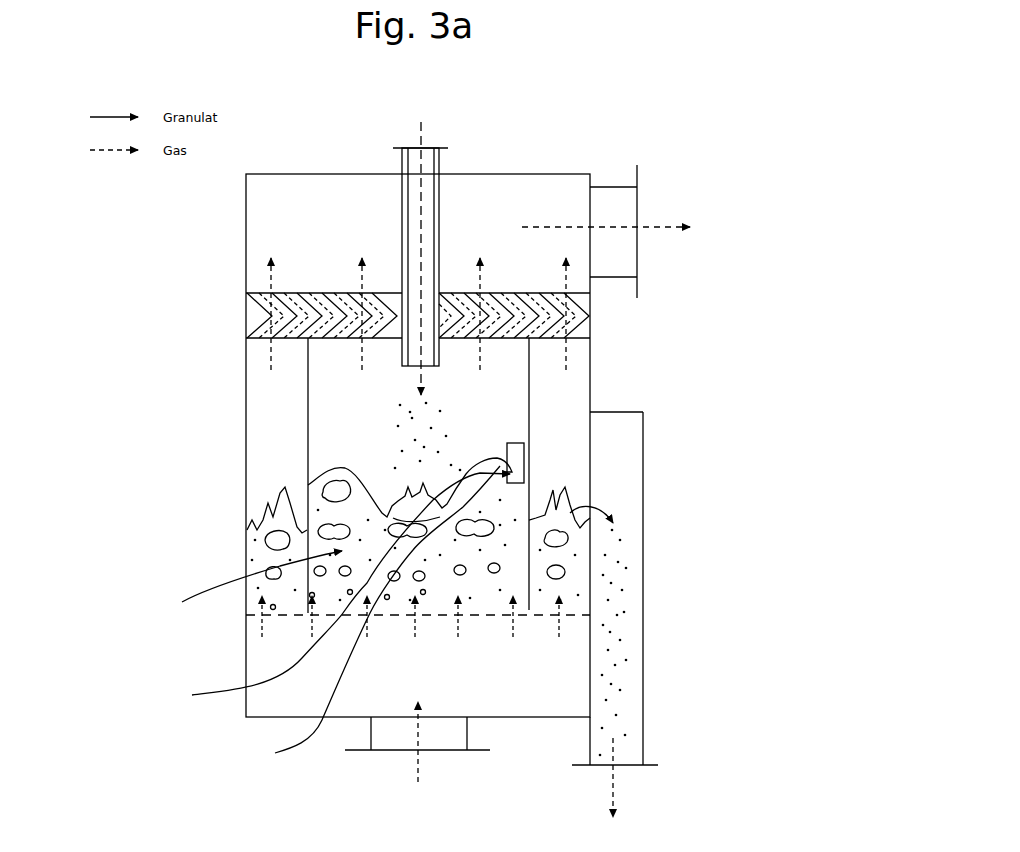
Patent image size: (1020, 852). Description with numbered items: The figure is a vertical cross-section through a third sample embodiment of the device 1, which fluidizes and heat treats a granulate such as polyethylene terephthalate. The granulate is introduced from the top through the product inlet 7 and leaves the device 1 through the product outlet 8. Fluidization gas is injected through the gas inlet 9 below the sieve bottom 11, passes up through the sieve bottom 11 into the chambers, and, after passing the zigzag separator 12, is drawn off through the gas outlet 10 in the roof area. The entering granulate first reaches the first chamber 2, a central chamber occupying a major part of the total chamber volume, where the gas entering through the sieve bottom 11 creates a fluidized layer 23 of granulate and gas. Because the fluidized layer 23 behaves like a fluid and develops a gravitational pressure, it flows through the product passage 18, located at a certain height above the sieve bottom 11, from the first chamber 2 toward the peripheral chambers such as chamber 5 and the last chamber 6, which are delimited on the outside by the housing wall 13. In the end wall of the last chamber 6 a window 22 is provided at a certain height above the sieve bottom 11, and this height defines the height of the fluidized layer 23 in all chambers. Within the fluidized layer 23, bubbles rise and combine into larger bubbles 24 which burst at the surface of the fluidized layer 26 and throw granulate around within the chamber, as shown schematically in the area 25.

The device 1 is at (573, 146).
The first chamber 2 is at (489, 404).
The chamber 5 is at (263, 473).
The last chamber 6 is at (568, 472).
The product inlet 7 is at (432, 224).
The product outlet 8 is at (633, 618).
The gas inlet 9 is at (437, 738).
The gas outlet 10 is at (623, 258).
The sieve bottom 11 is at (485, 620).
The zigzag separator 12 is at (518, 302).
The housing wall 13 is at (246, 243).
The product passage 18 is at (515, 452).
The window 22 is at (592, 503).
The fluidized layer 23 is at (238, 586).
The larger bubbles 24 is at (370, 630).
The area of granulate being thrown around 25 is at (323, 595).
The surface of the fluidized layer 26 is at (332, 468).